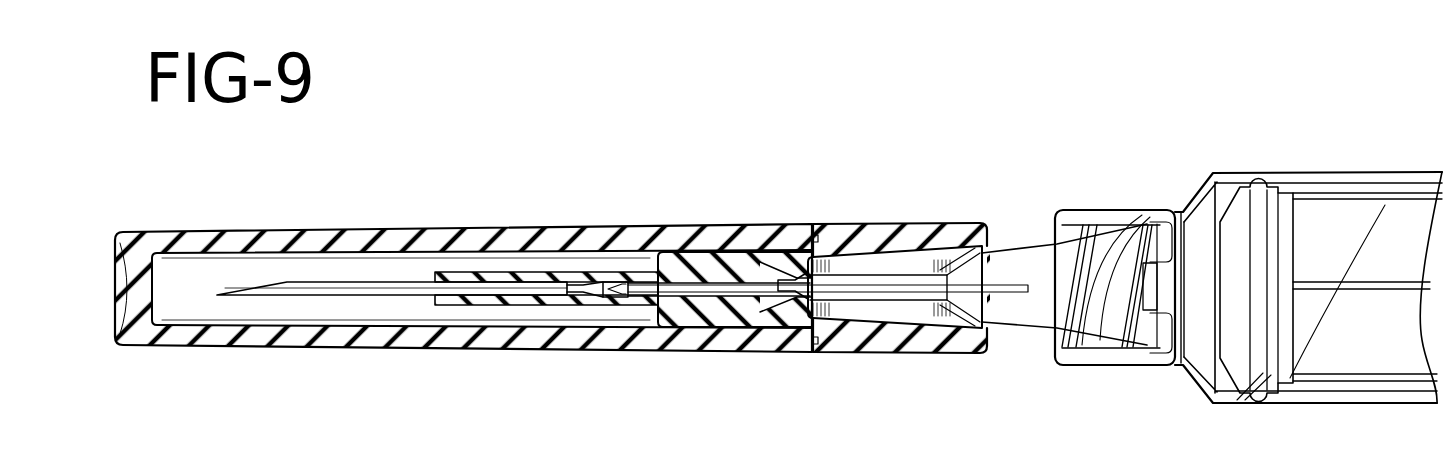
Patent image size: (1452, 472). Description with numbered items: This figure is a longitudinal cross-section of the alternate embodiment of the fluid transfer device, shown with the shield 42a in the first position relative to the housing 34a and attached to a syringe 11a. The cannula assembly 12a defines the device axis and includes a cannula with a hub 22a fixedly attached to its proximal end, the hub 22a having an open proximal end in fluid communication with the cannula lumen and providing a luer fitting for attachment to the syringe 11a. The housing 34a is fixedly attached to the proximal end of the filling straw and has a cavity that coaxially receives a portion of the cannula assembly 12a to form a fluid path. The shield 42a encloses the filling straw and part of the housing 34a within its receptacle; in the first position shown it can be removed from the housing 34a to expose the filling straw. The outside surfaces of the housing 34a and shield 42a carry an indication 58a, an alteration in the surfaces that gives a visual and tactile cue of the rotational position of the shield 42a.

The syringe 11a is at (1228, 172).
The cannula assembly 12a is at (1018, 250).
The hub 22a is at (1020, 327).
The housing 34a is at (900, 232).
The shield 42a is at (617, 227).
The indication 58a is at (828, 227).